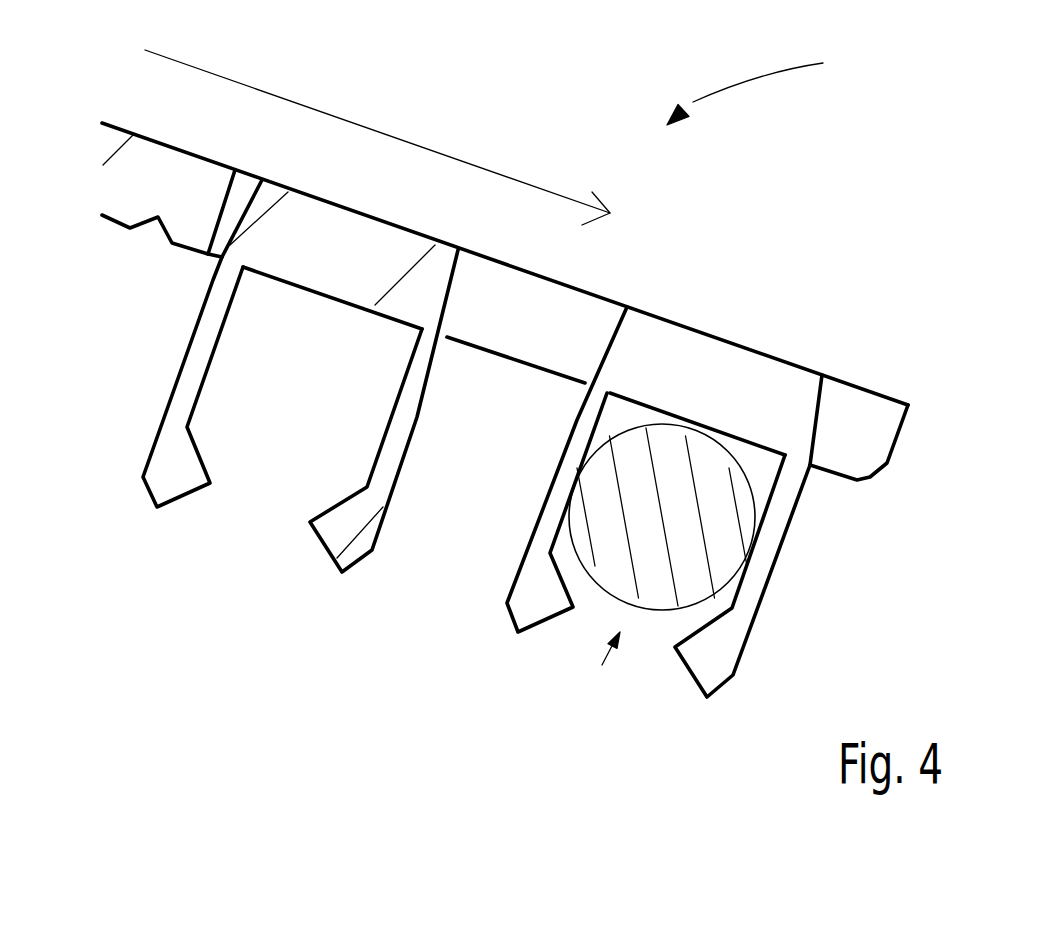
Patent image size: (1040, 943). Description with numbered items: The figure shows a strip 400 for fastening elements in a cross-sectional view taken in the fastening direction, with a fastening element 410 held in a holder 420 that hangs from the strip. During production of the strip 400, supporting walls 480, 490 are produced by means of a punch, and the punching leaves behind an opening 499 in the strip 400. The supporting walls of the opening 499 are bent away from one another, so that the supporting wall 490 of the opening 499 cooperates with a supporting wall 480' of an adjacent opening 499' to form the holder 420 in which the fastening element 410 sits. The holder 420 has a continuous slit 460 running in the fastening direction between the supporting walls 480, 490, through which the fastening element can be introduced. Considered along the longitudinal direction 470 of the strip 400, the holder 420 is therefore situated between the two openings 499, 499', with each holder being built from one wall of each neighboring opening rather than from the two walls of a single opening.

The strip 400 is at (789, 82).
The fastening element 410 is at (680, 497).
The holder 420 is at (644, 546).
The continuous slit 460 is at (593, 669).
The longitudinal direction 470 is at (370, 128).
The supporting wall 480 is at (300, 456).
The supporting wall 480' is at (835, 576).
The supporting wall 490 is at (543, 530).
The opening 499 is at (505, 289).
The adjacent opening 499' is at (912, 403).